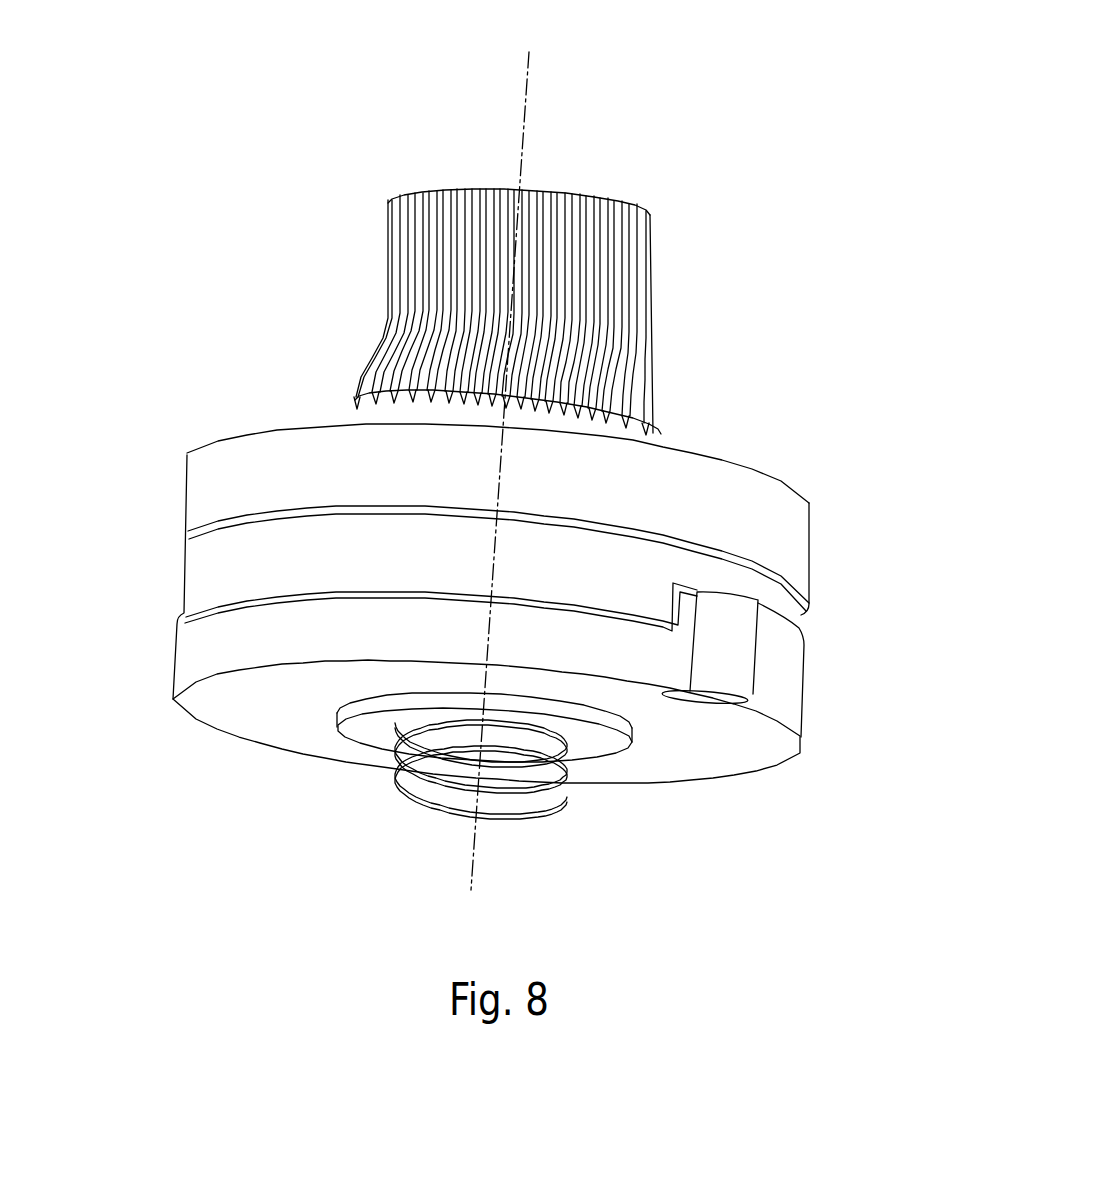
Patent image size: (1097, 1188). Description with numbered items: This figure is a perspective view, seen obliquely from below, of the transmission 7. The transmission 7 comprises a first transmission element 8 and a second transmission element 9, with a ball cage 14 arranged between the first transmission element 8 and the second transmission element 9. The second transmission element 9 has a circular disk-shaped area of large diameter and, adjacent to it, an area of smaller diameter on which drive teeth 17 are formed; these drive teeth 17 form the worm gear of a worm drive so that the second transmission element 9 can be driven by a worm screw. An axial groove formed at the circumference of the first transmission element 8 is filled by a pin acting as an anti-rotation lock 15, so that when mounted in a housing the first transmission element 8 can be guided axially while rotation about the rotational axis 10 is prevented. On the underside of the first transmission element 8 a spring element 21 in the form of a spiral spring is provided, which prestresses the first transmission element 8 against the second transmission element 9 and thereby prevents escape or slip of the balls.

The transmission 7 is at (830, 350).
The first transmission element 8 is at (783, 693).
The second transmission element 9 is at (788, 528).
The rotational axis 10 is at (528, 97).
The ball cage 14 is at (218, 568).
The anti-rotation lock 15 is at (740, 735).
The drive teeth 17 is at (667, 262).
The spring element 21 is at (565, 803).